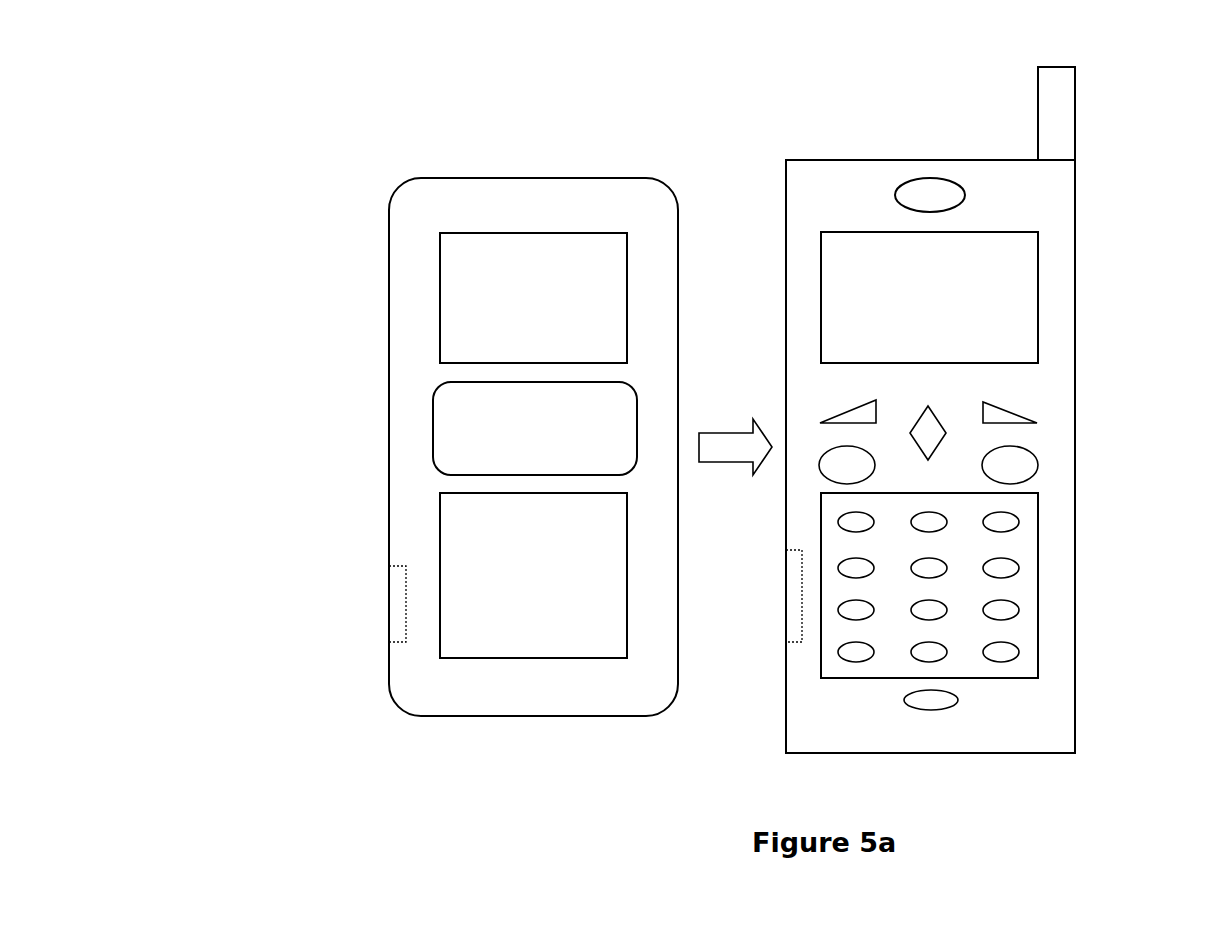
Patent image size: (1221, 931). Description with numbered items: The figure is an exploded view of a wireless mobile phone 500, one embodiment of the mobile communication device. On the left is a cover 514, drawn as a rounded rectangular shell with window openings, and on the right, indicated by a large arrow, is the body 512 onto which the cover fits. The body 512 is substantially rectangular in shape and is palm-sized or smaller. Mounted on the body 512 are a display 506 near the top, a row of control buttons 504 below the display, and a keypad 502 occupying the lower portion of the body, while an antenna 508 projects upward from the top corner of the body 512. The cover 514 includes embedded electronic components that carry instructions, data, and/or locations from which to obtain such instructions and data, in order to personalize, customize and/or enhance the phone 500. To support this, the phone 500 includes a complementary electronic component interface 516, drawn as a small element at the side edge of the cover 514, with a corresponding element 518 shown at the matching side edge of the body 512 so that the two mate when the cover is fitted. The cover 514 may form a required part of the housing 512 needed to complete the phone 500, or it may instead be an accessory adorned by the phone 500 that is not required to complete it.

The wireless mobile phone 500 is at (259, 101).
The keypad 502 is at (1018, 549).
The control buttons 504 is at (1002, 419).
The display 506 is at (1057, 183).
The antenna 508 is at (1057, 108).
The body 512 is at (1020, 291).
The cover 514 is at (407, 290).
The complementary electronic component interface 516 is at (403, 587).
The side button 518 is at (800, 627).